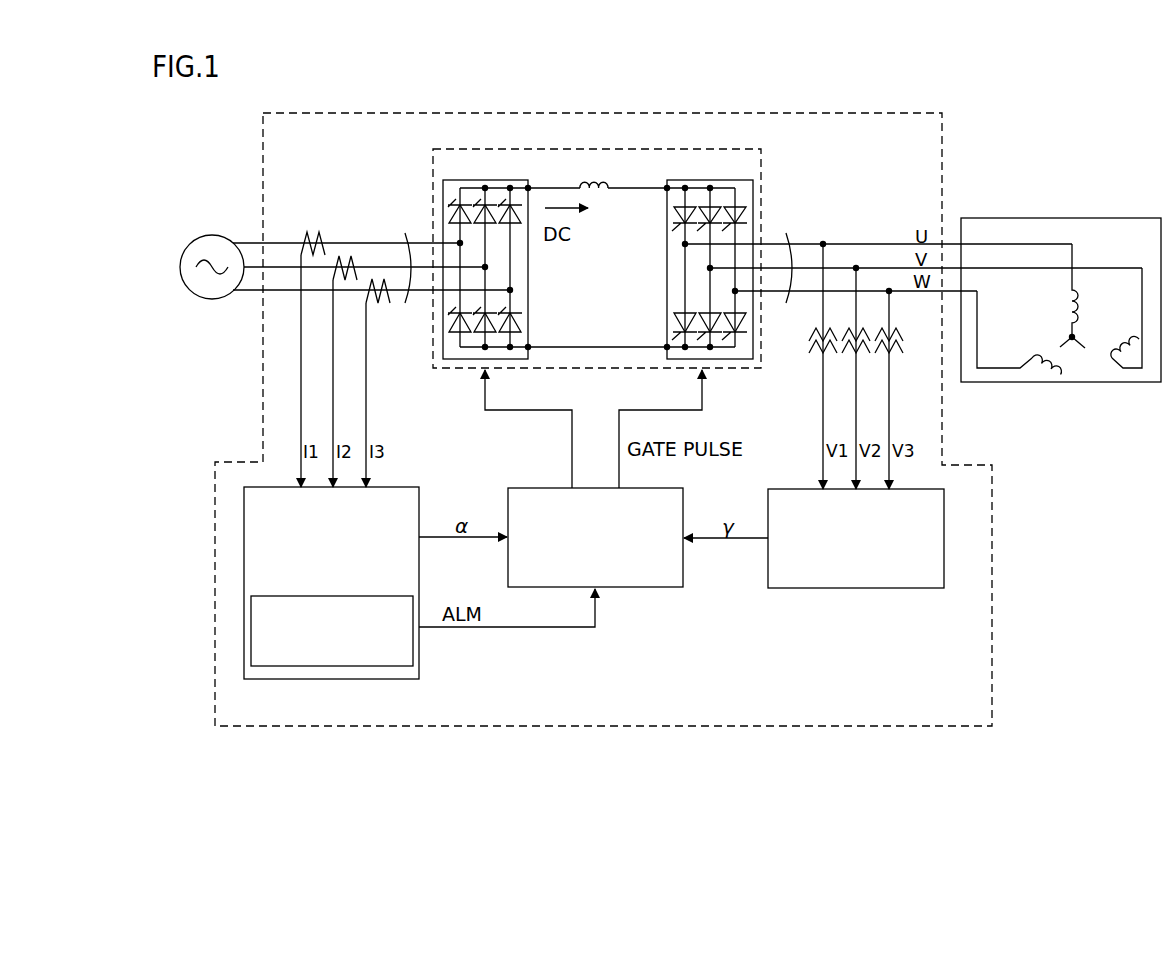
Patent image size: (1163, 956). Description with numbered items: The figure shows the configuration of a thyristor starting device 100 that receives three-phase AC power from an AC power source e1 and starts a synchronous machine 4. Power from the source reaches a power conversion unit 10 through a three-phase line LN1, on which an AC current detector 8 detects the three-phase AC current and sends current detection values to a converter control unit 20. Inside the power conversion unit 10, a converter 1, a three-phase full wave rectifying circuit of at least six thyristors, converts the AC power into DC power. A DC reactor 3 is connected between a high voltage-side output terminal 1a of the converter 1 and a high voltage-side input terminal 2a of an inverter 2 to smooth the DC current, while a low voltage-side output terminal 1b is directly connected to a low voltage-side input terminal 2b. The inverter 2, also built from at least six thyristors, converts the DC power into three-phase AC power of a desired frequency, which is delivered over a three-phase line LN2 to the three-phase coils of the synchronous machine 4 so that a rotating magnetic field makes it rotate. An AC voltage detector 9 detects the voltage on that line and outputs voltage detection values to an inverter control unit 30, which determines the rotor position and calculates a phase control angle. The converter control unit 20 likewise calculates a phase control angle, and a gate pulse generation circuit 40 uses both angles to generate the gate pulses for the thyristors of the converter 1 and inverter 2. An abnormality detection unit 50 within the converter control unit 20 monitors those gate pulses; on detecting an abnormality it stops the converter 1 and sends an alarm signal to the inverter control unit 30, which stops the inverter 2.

The thyristor starting device 100 is at (887, 113).
The power conversion unit 10 is at (708, 149).
The converter 1 is at (485, 172).
The high voltage-side output terminal 1a is at (530, 186).
The low voltage-side output terminal 1b is at (530, 344).
The inverter 2 is at (713, 174).
The high voltage-side input terminal 2a is at (665, 186).
The low voltage-side input terminal 2b is at (665, 345).
The DC reactor 3 is at (597, 174).
The synchronous machine 4 is at (1127, 218).
The AC current detector 8 is at (310, 232).
The AC voltage detector 9 is at (862, 325).
The converter control unit 20 is at (333, 597).
The inverter control unit 30 is at (907, 588).
The gate pulse generation circuit 40 is at (646, 588).
The abnormality detection unit 50 is at (357, 596).
The AC power source e1 is at (210, 235).
The three-phase line LN1 is at (406, 233).
The three-phase line LN2 is at (788, 232).